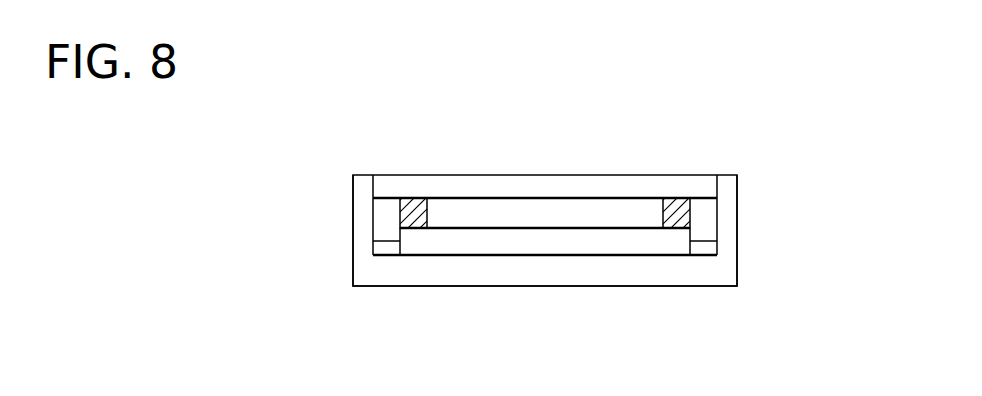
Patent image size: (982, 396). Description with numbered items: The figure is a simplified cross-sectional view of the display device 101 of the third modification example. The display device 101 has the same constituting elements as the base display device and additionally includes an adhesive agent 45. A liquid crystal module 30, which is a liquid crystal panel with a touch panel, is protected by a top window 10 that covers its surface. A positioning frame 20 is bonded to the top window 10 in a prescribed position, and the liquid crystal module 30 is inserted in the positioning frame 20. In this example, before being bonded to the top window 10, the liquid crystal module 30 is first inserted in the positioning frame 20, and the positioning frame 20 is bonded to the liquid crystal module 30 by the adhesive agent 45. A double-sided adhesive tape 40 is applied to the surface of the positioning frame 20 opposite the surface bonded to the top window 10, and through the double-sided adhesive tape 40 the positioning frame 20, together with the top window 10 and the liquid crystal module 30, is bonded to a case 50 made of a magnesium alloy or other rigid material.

The display device 101 is at (783, 142).
The case 50 is at (353, 175).
The top window 10 is at (538, 184).
The positioning frame 20 is at (378, 238).
The double-sided adhesive tape 40 is at (390, 252).
The adhesive agent 45 is at (416, 226).
The liquid crystal module 30 is at (538, 222).